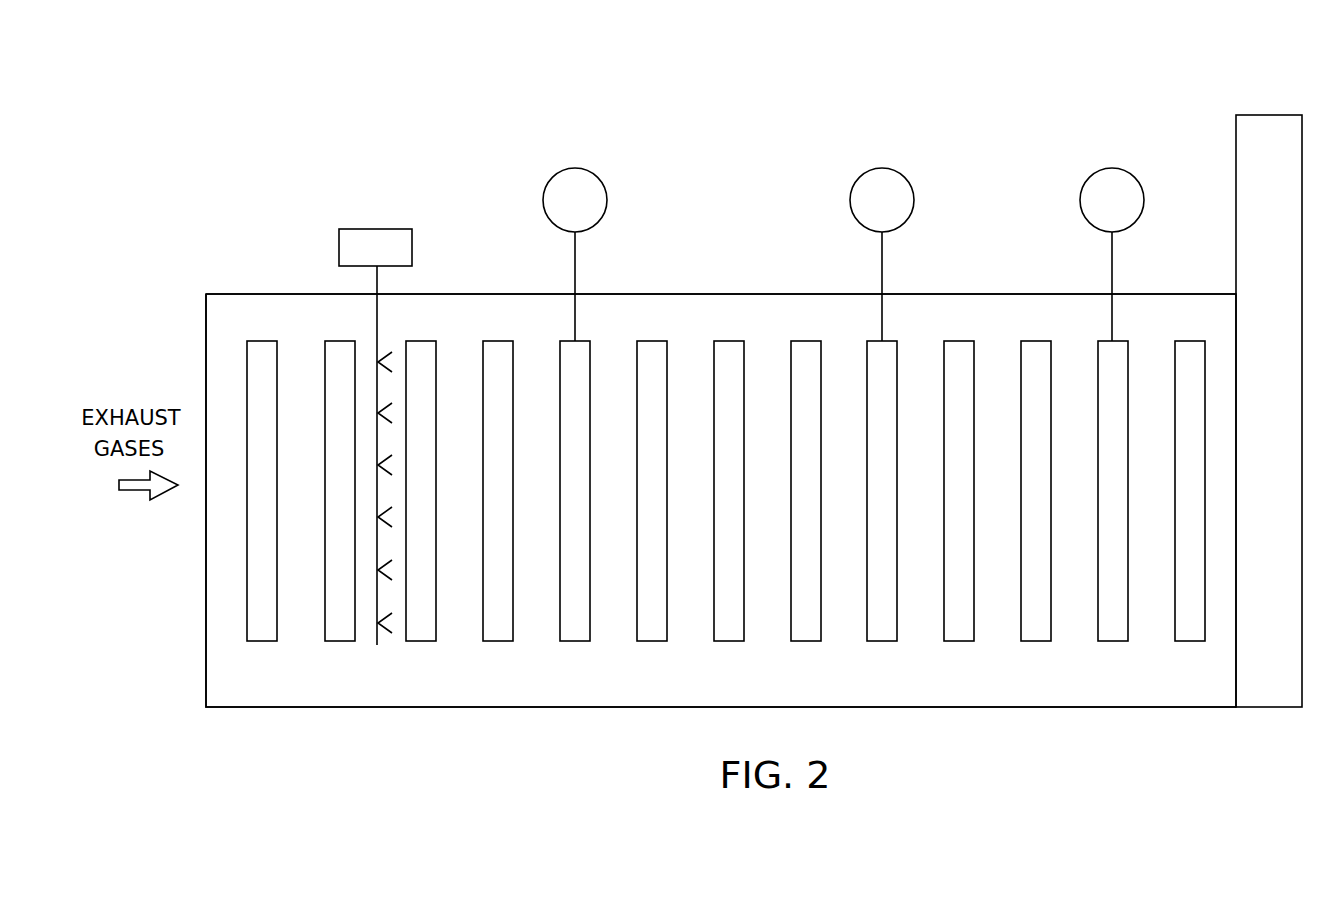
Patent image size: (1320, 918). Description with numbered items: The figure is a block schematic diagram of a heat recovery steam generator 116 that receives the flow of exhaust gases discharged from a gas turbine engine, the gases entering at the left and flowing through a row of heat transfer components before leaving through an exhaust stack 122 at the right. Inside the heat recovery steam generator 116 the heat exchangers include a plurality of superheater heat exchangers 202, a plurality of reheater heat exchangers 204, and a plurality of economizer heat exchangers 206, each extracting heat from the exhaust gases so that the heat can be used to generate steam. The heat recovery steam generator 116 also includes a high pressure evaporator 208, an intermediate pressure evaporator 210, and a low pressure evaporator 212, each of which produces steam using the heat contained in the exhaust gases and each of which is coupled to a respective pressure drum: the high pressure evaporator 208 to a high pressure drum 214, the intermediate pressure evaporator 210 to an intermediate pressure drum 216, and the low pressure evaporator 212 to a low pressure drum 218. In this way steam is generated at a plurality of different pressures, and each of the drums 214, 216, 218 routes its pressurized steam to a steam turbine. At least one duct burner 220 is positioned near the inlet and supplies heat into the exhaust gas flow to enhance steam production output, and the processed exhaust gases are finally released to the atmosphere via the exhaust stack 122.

The heat recovery steam generator 116 is at (478, 95).
The exhaust stack 122 is at (1268, 115).
The superheater heat exchangers 202 is at (263, 641).
The reheater heat exchangers 204 is at (341, 641).
The economizer heat exchangers 206 is at (730, 641).
The high pressure evaporator 208 is at (576, 641).
The intermediate pressure evaporator 210 is at (883, 641).
The low pressure evaporator 212 is at (1114, 641).
The high pressure drum 214 is at (575, 168).
The intermediate pressure drum 216 is at (882, 168).
The low pressure drum 218 is at (1112, 168).
The duct burner 220 is at (388, 229).